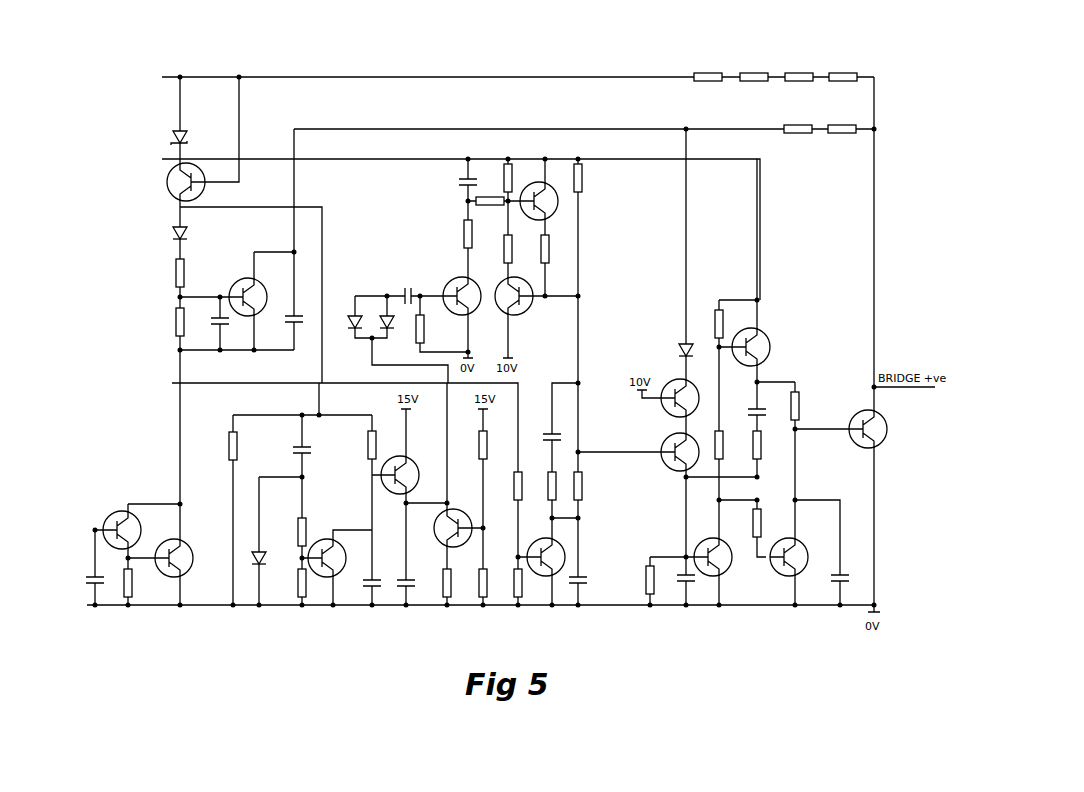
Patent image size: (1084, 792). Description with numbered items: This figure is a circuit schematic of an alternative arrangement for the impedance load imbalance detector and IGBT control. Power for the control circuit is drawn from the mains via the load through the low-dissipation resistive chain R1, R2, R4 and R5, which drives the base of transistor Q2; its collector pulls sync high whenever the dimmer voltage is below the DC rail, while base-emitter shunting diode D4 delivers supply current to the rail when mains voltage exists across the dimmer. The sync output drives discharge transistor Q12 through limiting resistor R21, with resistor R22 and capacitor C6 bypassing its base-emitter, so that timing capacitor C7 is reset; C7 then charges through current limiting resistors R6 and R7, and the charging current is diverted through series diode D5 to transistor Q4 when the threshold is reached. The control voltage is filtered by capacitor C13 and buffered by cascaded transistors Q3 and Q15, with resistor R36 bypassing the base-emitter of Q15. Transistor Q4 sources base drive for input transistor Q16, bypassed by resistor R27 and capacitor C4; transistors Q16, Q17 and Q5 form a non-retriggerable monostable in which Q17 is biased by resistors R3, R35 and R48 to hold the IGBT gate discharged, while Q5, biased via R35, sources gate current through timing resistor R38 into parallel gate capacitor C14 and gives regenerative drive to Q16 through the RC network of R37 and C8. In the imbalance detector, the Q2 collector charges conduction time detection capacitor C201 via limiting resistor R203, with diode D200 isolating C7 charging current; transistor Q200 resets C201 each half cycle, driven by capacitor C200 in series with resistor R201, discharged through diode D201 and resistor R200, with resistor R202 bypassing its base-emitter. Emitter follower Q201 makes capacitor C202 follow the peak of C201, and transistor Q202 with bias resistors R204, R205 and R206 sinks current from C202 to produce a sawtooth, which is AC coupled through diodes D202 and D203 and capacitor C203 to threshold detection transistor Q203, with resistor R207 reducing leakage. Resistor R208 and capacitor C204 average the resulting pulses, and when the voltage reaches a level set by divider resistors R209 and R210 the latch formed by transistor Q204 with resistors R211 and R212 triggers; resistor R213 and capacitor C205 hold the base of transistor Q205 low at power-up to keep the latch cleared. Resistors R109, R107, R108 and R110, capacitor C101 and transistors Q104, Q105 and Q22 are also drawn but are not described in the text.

The resistive chain resistor R5 is at (708, 66).
The resistive chain resistor R4 is at (754, 66).
The resistive chain resistor R2 is at (799, 66).
The resistive chain resistor R1 is at (843, 66).
The current limiting resistor R7 is at (798, 118).
The current limiting resistor R6 is at (842, 118).
The base-emitter shunting diode D4 is at (172, 138).
The sync transistor Q2 is at (182, 186).
The isolating diode D200 is at (166, 233).
The limiting resistor R21 is at (167, 273).
The base-emitter bypass resistor R22 is at (167, 323).
The base-emitter bypass capacitor C6 is at (216, 312).
The timing capacitor C7 is at (287, 312).
The discharge transistor Q12 is at (248, 290).
The coupling diode D202 is at (345, 330).
The series connected diode D203 is at (398, 330).
The coupling capacitor C203 is at (410, 287).
The leakage reducing resistor R207 is at (436, 329).
The threshold detection transistor Q203 is at (471, 305).
The averaging resistor R208 is at (454, 236).
The averaging capacitor C204 is at (455, 178).
The voltage divider resistor R210 is at (494, 176).
The voltage divider resistor R209 is at (491, 215).
The latch transistor Q204 is at (548, 196).
The latch resistor R211 is at (523, 249).
The latch resistor R212 is at (560, 249).
The latch clearing transistor Q205 is at (519, 305).
The resistor R109 is at (593, 176).
The series connected diode D5 is at (675, 351).
The transistor Q105 is at (673, 396).
The threshold transistor Q4 is at (684, 450).
The bias resistor R3 is at (710, 324).
The gate current sourcing transistor Q5 is at (758, 348).
The regenerative network capacitor C8 is at (754, 410).
The timing resistor R38 is at (808, 406).
The bias resistor R35 is at (733, 445).
The regenerative network resistor R37 is at (771, 445).
The bias resistor R48 is at (771, 523).
The input transistor Q16 is at (722, 563).
The gate discharge transistor Q17 is at (797, 561).
The base-emitter bypass resistor R27 is at (637, 580).
The base-emitter bypass capacitor C4 is at (678, 577).
The parallel gate capacitor C14 is at (849, 579).
The transistor Q22 is at (876, 432).
The buffer transistor Q3 is at (117, 525).
The filter capacitor C13 is at (84, 576).
The base-emitter bypass resistor R36 is at (144, 583).
The buffer transistor Q15 is at (181, 563).
The discharge resistor R200 is at (248, 447).
The pulse drive capacitor C200 is at (292, 447).
The discharge diode D201 is at (248, 553).
The pulse drive resistor R201 is at (289, 532).
The base-emitter bypass resistor R202 is at (287, 582).
The reset transistor Q200 is at (338, 554).
The conduction time detection capacitor C201 is at (363, 579).
The limiting resistor R203 is at (359, 446).
The emitter follower transistor Q201 is at (411, 470).
The peak holding capacitor C202 is at (397, 579).
The bias resistor R205 is at (470, 446).
The current sink transistor Q202 is at (458, 522).
The bias resistor R204 is at (434, 582).
The bias resistor R206 is at (469, 582).
The resistor R108 is at (504, 582).
The resistor R107 is at (504, 486).
The latch clearing resistor R213 is at (538, 486).
The latch clearing capacitor C205 is at (541, 435).
The transistor Q104 is at (543, 550).
The resistor R110 is at (593, 486).
The capacitor C101 is at (589, 577).